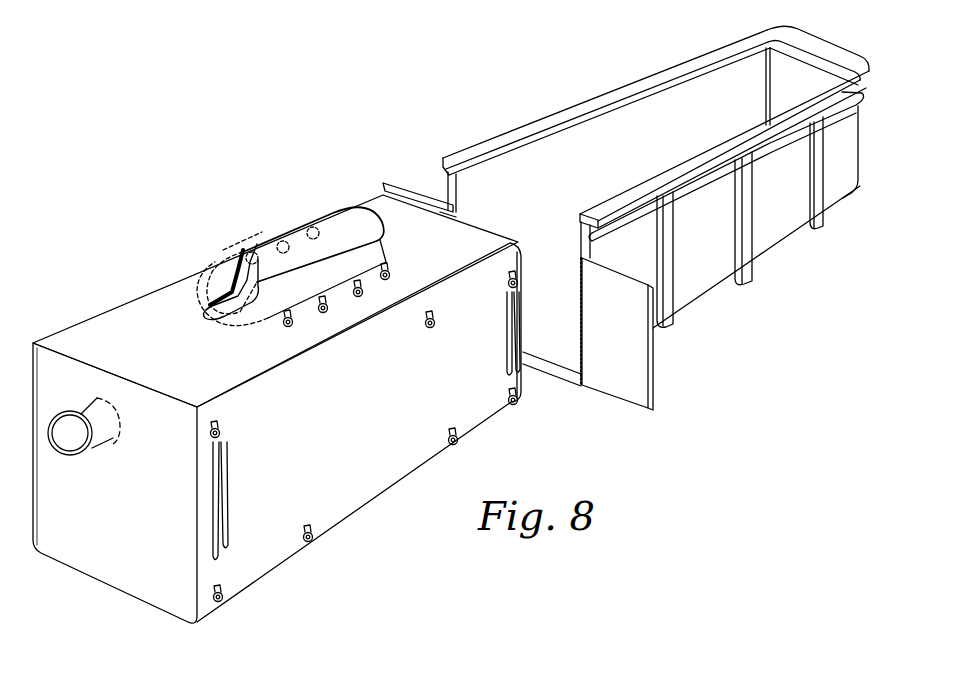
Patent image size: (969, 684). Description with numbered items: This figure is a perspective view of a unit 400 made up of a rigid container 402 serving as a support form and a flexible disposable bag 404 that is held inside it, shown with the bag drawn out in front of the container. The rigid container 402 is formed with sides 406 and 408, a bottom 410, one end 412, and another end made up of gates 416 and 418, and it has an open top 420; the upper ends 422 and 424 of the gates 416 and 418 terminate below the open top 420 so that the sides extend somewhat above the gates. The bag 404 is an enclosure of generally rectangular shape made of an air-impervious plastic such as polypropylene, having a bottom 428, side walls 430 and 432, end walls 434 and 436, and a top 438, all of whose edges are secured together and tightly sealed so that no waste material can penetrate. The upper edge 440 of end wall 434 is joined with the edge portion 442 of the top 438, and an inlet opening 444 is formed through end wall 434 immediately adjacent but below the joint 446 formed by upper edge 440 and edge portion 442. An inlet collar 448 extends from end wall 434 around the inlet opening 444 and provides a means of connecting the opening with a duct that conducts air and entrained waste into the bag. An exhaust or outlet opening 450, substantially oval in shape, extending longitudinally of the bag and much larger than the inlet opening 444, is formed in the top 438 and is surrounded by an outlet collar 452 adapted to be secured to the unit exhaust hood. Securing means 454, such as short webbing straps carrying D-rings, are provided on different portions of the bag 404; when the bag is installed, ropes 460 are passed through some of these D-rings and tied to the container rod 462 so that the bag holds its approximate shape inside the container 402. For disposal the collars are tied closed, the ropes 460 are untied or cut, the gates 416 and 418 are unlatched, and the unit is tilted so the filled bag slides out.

The unit 400 is at (660, 209).
The rigid container 402 is at (768, 250).
The flexible disposable bag 404 is at (306, 385).
The side 406 is at (585, 133).
The side 408 is at (803, 193).
The bottom 410 is at (555, 342).
The end 412 is at (827, 77).
The gate 416 is at (637, 370).
The gate 418 is at (388, 182).
The open top 420 is at (716, 80).
The upper end 422 is at (632, 278).
The upper end 424 is at (418, 190).
The bottom 428 is at (167, 607).
The side wall 430 is at (387, 480).
The side wall 432 is at (113, 307).
The end wall 434 is at (117, 573).
The end wall 436 is at (497, 230).
The top 438 is at (150, 307).
The upper edge 440 is at (177, 407).
The edge portion 442 is at (170, 383).
The inlet opening 444 is at (72, 455).
The joint 446 is at (120, 373).
The inlet collar 448 is at (85, 412).
The exhaust opening 450 is at (233, 310).
The outlet collar 452 is at (333, 219).
The securing means 454 is at (297, 240).
The ropes 460 is at (227, 480).
The container rod 462 is at (707, 187).